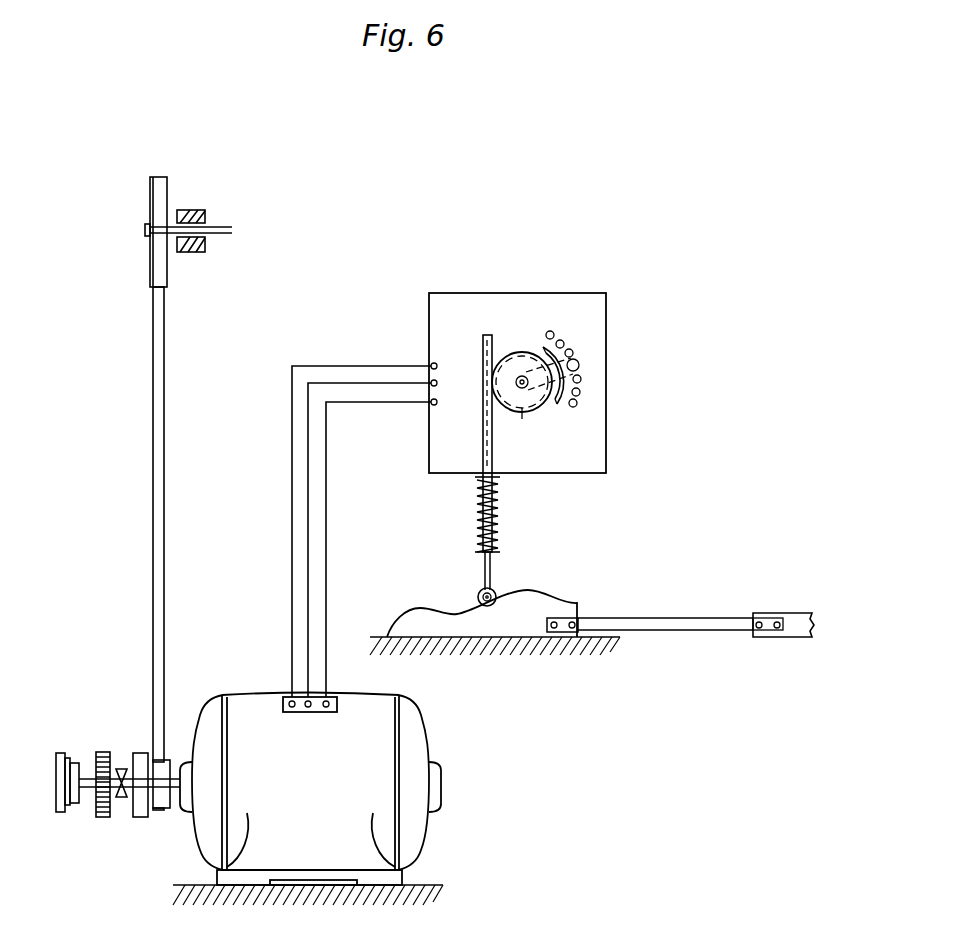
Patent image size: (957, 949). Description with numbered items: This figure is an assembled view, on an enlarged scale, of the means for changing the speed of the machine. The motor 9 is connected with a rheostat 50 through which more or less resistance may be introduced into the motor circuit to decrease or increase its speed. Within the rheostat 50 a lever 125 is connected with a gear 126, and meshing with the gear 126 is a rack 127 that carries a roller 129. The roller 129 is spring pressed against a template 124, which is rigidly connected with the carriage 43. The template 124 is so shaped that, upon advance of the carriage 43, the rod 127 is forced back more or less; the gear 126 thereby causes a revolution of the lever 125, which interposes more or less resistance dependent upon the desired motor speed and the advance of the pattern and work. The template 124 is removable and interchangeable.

The motor 9 is at (308, 799).
The rheostat 50 is at (517, 383).
The lever 125 is at (575, 362).
The gear 126 is at (522, 399).
The rack 127 is at (485, 449).
The roller 129 is at (497, 594).
The template 124 is at (495, 622).
The carriage 43 is at (785, 618).